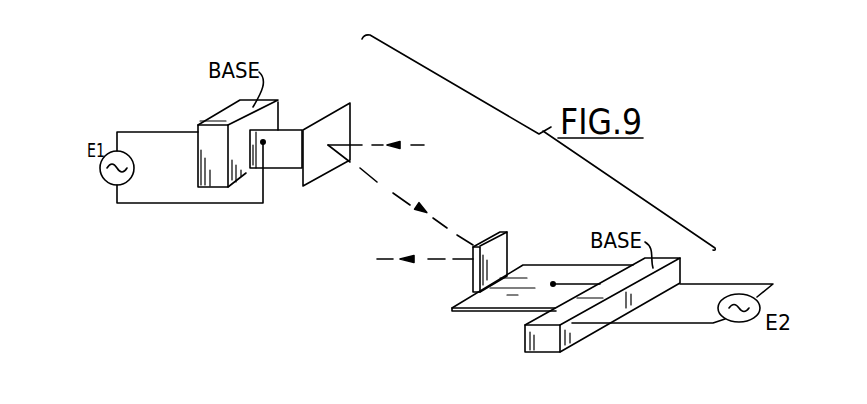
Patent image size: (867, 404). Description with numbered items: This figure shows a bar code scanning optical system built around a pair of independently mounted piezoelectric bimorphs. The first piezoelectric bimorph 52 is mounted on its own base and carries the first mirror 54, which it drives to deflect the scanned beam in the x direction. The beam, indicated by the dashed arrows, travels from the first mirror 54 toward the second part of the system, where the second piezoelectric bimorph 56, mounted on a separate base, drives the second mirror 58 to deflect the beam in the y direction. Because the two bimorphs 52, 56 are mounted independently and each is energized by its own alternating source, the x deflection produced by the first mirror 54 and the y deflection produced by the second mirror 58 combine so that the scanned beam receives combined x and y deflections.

The first piezoelectric bimorph 52 is at (272, 144).
The first mirror 54 is at (300, 178).
The second piezoelectric bimorph 56 is at (505, 316).
The second mirror 58 is at (505, 243).